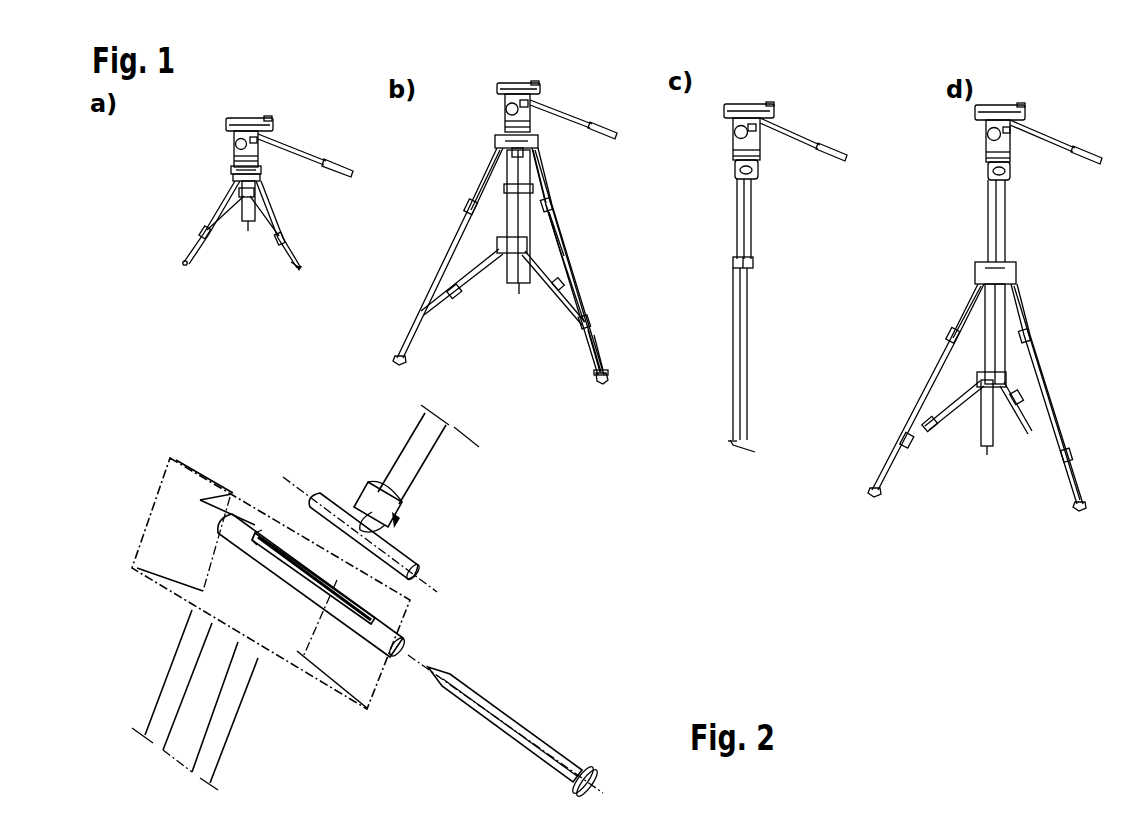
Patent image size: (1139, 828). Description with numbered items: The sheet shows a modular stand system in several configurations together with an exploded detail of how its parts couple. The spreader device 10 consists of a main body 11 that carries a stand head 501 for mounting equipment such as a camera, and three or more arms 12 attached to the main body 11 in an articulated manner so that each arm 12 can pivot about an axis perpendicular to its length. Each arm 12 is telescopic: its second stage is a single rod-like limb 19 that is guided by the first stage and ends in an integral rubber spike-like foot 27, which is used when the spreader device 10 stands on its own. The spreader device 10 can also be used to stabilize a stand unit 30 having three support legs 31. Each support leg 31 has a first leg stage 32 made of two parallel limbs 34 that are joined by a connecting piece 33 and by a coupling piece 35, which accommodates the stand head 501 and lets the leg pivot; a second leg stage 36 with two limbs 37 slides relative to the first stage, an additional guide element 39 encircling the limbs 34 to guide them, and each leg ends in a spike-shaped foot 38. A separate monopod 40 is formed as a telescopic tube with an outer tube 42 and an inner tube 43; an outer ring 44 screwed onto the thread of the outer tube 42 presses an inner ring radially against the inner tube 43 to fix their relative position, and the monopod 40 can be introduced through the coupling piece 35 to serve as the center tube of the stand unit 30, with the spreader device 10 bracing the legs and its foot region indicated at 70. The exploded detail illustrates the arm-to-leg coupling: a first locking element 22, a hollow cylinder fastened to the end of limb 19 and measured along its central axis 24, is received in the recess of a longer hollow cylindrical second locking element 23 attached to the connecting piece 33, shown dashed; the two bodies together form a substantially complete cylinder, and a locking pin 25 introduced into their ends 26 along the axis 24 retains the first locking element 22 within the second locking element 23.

In FIG. 1, the spreader device 10 is at (192, 181).
In FIG. 1, the main body 11 is at (237, 168).
In FIG. 1, the arm 12 is at (276, 241).
In FIG. 2, the limb 19 is at (432, 453).
In FIG. 2, the first locking element 22 is at (396, 555).
In FIG. 2, the second locking element 23 is at (410, 641).
In FIG. 2, the central axis 24 is at (437, 592).
In FIG. 2, the locking pin 25 is at (537, 738).
In FIG. 2, the ends 26 is at (247, 523).
In FIG. 1, the integral rubber spike-like foot 27 is at (298, 266).
In FIG. 2, the integral rubber spike-like foot 27 is at (403, 522).
In FIG. 1, the stand unit 30 is at (445, 185).
In FIG. 1, the support leg 31 is at (580, 241).
In FIG. 1, the first leg stage 32 is at (556, 169).
In FIG. 1, the connecting piece 33 is at (594, 318).
In FIG. 2, the connecting piece 33 is at (155, 525).
In FIG. 1, the parallel limbs 34 is at (543, 161).
In FIG. 1, the coupling piece 35 is at (505, 131).
In FIG. 1, the second leg stage 36 is at (613, 344).
In FIG. 2, the second leg stage 36 is at (162, 641).
In FIG. 1, the limbs 37 is at (583, 331).
In FIG. 2, the limbs 37 is at (167, 700).
In FIG. 1, the foot 38 is at (618, 378).
In FIG. 1, the additional guide element 39 is at (551, 194).
In FIG. 1, the monopod 40 is at (871, 341).
In FIG. 1, the outer tube 42 is at (746, 335).
In FIG. 1, the inner tube 43 is at (750, 211).
In FIG. 1, the outer ring 44 is at (733, 265).
In FIG. 1, the foot 70 is at (730, 455).
In FIG. 1, the stand head 501 is at (287, 109).